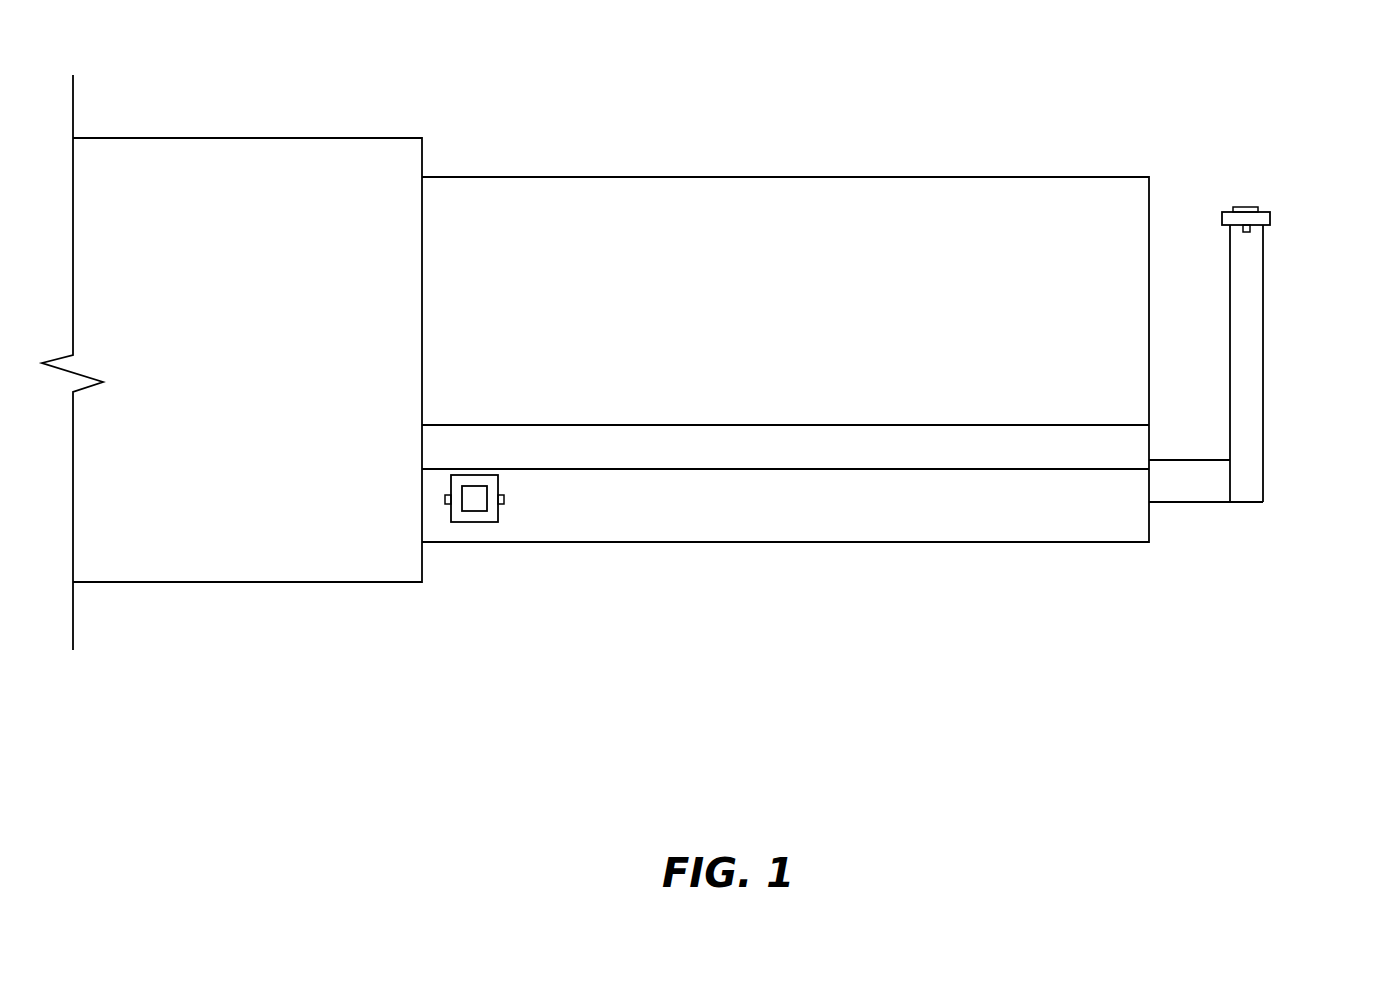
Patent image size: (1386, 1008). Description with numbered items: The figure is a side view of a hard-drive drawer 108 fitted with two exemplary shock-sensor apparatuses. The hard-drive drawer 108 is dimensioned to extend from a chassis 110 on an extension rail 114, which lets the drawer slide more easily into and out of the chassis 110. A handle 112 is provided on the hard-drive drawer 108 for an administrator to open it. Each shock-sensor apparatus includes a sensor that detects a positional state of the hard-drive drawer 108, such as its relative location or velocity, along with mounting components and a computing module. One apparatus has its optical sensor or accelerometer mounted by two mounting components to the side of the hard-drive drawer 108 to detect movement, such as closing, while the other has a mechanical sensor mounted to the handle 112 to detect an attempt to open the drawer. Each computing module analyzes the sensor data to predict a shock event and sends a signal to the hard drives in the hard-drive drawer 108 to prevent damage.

The hard-drive drawer 108 is at (778, 177).
The chassis 110 is at (267, 138).
The handle 112 is at (1237, 503).
The extension rail 114 is at (827, 470).